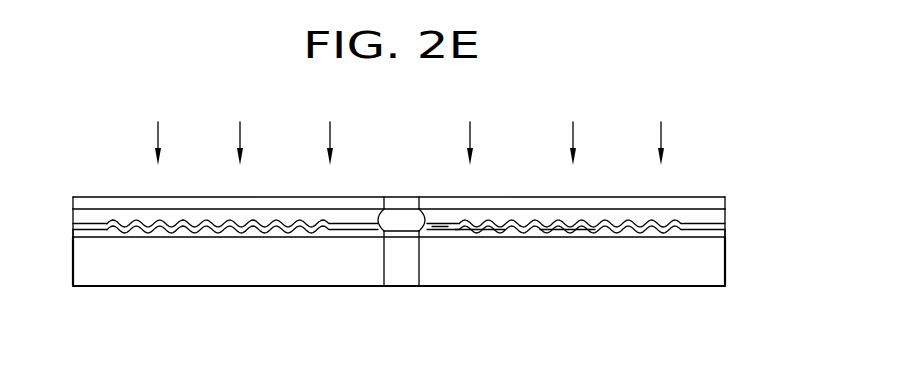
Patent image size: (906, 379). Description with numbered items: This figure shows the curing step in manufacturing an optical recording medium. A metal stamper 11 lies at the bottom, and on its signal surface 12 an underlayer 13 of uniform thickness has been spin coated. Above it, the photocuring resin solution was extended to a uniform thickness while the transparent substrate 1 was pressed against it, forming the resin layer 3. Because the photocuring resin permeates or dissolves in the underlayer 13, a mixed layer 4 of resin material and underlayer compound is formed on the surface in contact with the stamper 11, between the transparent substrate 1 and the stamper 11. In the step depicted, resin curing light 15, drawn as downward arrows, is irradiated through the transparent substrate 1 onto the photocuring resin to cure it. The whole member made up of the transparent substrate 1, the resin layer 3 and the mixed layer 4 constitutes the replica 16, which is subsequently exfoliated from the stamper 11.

The transparent substrate 1 is at (721, 196).
The resin layer 3 is at (727, 210).
The mixed layer 4 is at (427, 245).
The stamper 11 is at (650, 233).
The signal surface 12 is at (567, 230).
The underlayer 13 is at (481, 230).
The resin curing light 15 is at (662, 126).
The replica 16 is at (460, 206).